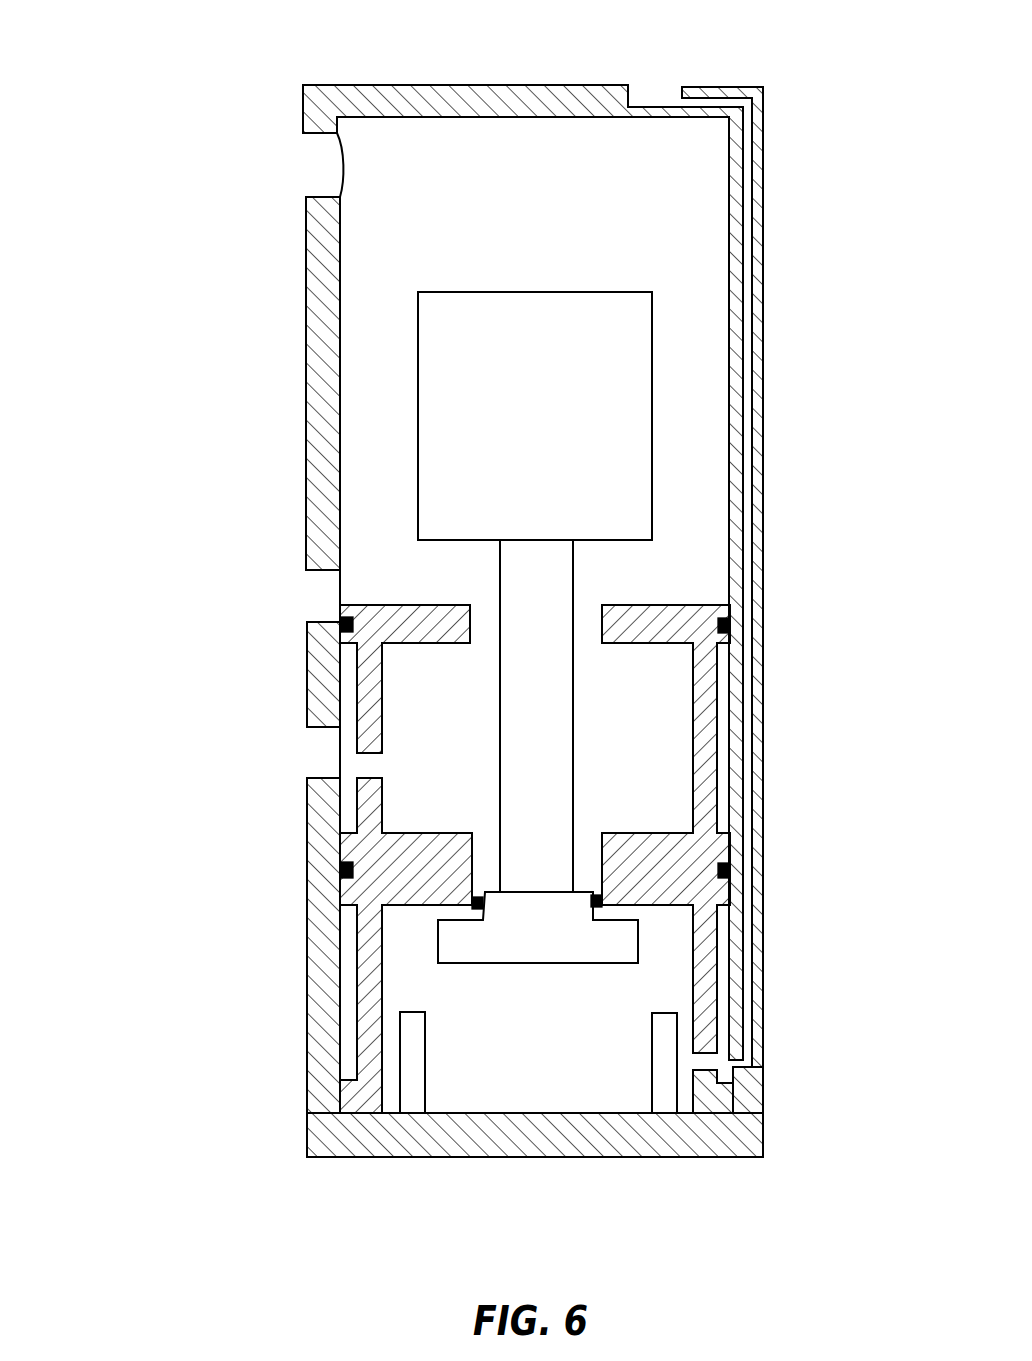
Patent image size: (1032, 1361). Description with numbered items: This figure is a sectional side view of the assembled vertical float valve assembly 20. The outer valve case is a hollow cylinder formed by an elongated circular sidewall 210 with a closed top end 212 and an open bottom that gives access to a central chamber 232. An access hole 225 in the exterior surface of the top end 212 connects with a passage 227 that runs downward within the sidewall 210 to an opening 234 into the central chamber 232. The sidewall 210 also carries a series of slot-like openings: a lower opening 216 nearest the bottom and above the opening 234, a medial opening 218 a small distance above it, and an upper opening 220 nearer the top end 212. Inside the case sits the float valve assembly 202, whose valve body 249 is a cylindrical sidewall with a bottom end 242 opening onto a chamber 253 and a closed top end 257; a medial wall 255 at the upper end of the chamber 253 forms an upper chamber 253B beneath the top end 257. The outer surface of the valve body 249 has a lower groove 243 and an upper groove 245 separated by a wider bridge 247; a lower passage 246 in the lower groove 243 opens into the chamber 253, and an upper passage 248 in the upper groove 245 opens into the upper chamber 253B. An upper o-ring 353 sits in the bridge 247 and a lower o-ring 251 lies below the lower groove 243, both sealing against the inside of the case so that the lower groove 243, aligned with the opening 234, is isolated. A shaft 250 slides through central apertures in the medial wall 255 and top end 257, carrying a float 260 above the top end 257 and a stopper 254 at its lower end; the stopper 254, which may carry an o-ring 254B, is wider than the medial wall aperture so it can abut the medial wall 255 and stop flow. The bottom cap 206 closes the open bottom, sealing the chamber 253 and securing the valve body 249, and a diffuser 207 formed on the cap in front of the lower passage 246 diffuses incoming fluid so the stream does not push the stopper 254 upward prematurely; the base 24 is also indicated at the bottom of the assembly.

The vertical float valve assembly 20 is at (192, 1063).
The base 24 is at (530, 1140).
The float valve assembly 202 is at (705, 848).
The float valve bottom cap 206 is at (396, 1140).
The diffuser 207 is at (665, 1100).
The circular sidewall 210 is at (320, 452).
The closed top end 212 is at (480, 100).
The lower opening 216 is at (334, 785).
The medial opening 218 is at (319, 577).
The upper opening 220 is at (338, 197).
The access hole 225 is at (658, 90).
The passage 227 is at (755, 402).
The central chamber 232 is at (668, 216).
The opening 234 is at (750, 1060).
The bottom end 242 is at (720, 1105).
The lower groove 243 is at (727, 1007).
The upper groove 245 is at (720, 785).
The lower passage 246 is at (688, 1062).
The bridge 247 is at (735, 887).
The upper passage 248 is at (328, 792).
The valve body 249 is at (684, 600).
The shaft 250 is at (573, 568).
The lower o-ring 251 is at (336, 626).
The chamber 253 is at (608, 1110).
The upper chamber 253B is at (660, 752).
The stopper 254 is at (440, 933).
The o-ring 254B is at (600, 907).
The medial wall 255 is at (645, 872).
The closed top end 257 is at (648, 598).
The float 260 is at (622, 337).
The upper o-ring 353 is at (345, 871).